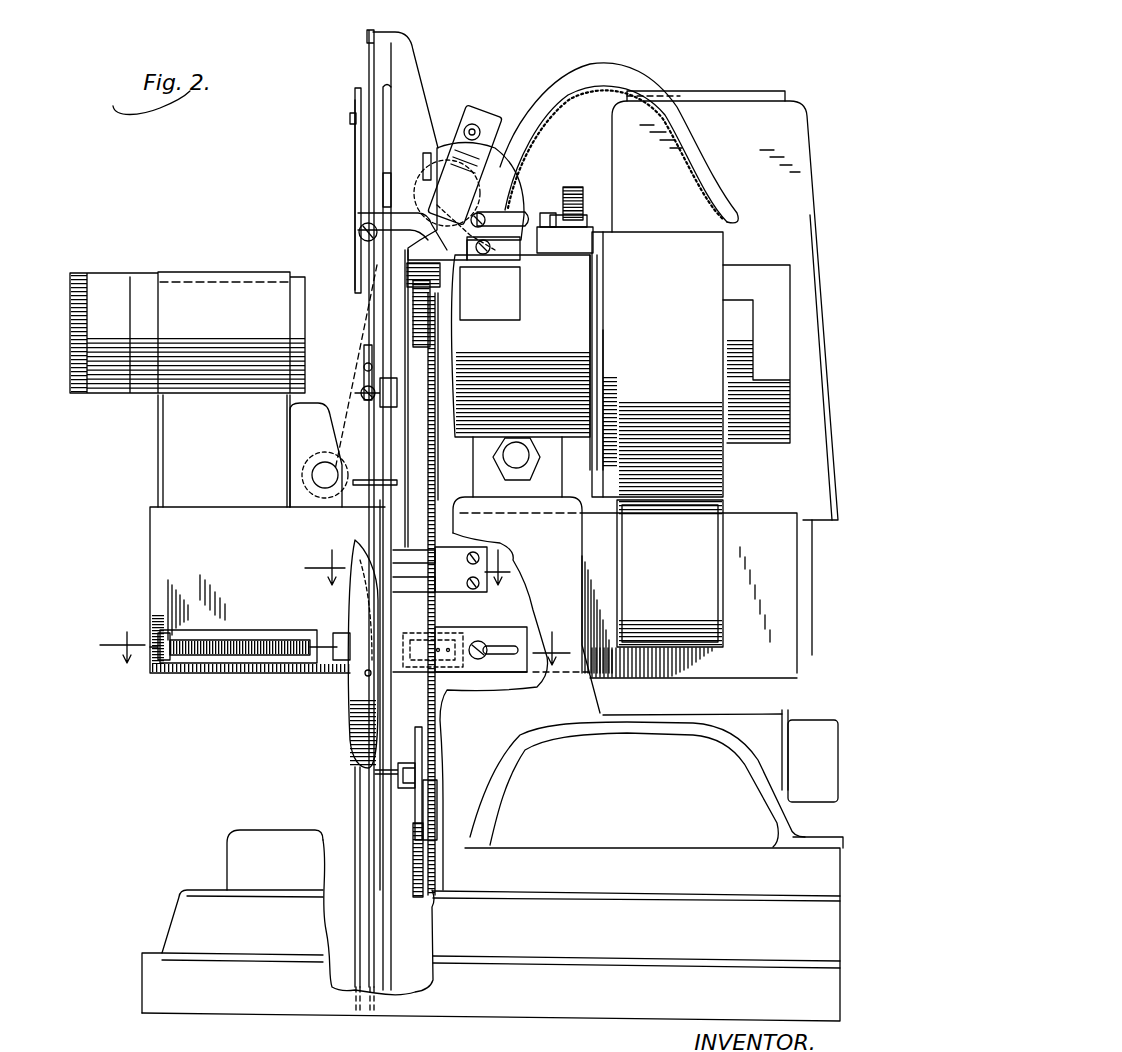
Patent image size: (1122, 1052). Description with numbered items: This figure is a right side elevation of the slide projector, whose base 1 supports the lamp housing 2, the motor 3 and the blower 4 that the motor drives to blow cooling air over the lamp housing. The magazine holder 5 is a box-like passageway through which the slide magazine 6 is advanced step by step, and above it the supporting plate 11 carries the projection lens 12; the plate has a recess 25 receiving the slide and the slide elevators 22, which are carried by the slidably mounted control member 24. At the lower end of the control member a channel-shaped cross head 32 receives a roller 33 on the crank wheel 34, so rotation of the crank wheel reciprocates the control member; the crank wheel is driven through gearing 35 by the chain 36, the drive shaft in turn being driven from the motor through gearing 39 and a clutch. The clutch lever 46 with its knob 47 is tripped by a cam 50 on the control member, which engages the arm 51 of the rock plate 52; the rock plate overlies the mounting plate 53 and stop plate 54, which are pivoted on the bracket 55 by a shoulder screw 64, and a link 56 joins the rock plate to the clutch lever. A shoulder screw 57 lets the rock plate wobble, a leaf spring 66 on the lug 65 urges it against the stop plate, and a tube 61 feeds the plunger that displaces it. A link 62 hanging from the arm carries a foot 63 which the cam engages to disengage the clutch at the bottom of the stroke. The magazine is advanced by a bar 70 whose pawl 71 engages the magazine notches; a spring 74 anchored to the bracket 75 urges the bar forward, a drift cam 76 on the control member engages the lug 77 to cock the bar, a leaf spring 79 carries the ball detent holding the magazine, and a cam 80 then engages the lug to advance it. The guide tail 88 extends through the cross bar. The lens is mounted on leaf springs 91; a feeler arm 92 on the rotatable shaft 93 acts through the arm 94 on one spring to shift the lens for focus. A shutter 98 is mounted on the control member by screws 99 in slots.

The base 1 is at (192, 1006).
The lamp housing 2 is at (780, 132).
The motor 3 is at (535, 325).
The blower 4 is at (680, 310).
The magazine holder 5 is at (163, 565).
The slide magazine 6 is at (807, 660).
The supporting plate 11 is at (408, 425).
The projection lens 12 is at (217, 293).
The slide elevators 22 is at (324, 648).
The control member 24 is at (353, 752).
The recess 25 is at (415, 567).
The cross head 32 is at (407, 788).
The roller 33 is at (407, 763).
The crank wheel 34 is at (417, 870).
The gearing 35 is at (448, 780).
The chain 36 is at (435, 483).
The gearing 39 is at (451, 303).
The clutch lever 46 is at (480, 233).
The knob 47 is at (577, 200).
The cam 50 is at (383, 189).
The arm 51 is at (397, 213).
The rock plate 52 is at (497, 247).
The mounting plate 53 is at (490, 183).
The stop plate 54 is at (487, 203).
The bracket 55 is at (405, 67).
The link 56 is at (510, 217).
The shoulder screw 57 is at (467, 267).
The tube 61 is at (580, 72).
The link 62 is at (367, 293).
The foot 63 is at (367, 500).
The shoulder screw 64 is at (462, 273).
The lug 65 is at (490, 157).
The leaf spring 66 is at (447, 153).
The bar 70 is at (487, 633).
The pawl 71 is at (420, 633).
The spring 74 is at (233, 653).
The bracket 75 is at (153, 663).
The drift cam 76 is at (347, 697).
The lug 77 is at (343, 675).
The leaf spring 79 is at (440, 577).
The cam 80 is at (364, 347).
The tail 88 is at (358, 805).
The leaf springs 91 is at (290, 448).
The feeler arm 92 is at (343, 380).
The rotatable shaft 93 is at (317, 472).
The arm 94 is at (307, 428).
The shutter 98 is at (355, 156).
The screws 99 is at (358, 242).